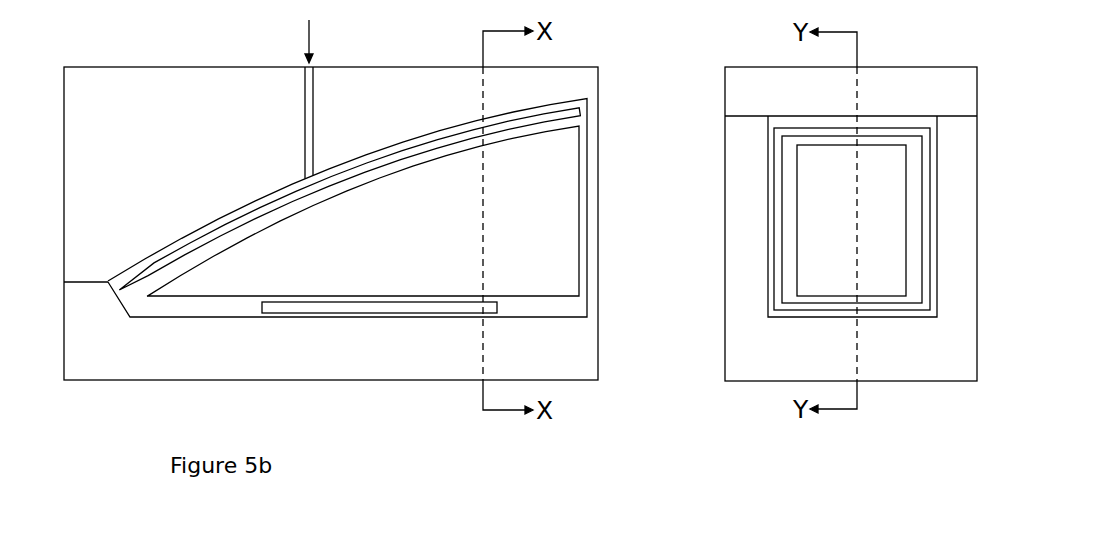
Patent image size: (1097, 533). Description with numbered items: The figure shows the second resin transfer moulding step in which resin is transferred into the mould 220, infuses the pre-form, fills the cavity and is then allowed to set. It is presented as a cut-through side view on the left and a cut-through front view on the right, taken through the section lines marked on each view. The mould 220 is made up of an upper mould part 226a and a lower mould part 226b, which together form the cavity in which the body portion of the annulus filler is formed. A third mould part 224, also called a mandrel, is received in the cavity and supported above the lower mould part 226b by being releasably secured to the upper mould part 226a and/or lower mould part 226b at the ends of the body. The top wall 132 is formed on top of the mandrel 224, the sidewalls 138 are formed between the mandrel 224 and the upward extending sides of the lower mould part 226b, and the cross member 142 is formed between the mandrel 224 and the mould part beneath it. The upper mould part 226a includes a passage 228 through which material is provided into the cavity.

The mould 220 is at (172, 53).
The third mould part 224 is at (1010, 168).
The upper mould part 226a is at (520, 181).
The lower mould part 226b is at (624, 350).
The passage 228 is at (306, 108).
The top wall 132 is at (362, 168).
The sidewalls 138 is at (925, 190).
The cross member 142 is at (277, 308).